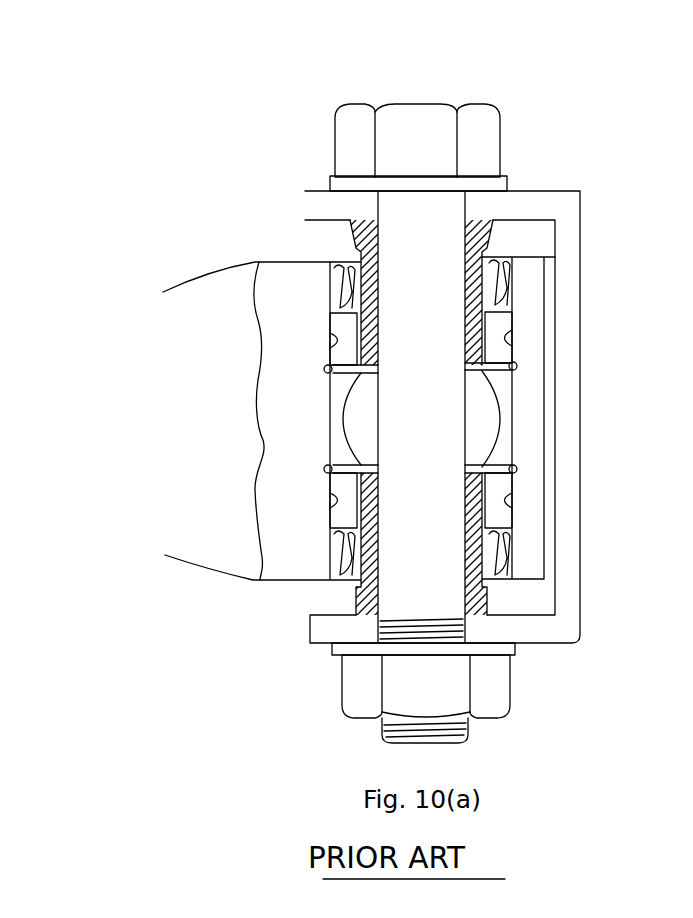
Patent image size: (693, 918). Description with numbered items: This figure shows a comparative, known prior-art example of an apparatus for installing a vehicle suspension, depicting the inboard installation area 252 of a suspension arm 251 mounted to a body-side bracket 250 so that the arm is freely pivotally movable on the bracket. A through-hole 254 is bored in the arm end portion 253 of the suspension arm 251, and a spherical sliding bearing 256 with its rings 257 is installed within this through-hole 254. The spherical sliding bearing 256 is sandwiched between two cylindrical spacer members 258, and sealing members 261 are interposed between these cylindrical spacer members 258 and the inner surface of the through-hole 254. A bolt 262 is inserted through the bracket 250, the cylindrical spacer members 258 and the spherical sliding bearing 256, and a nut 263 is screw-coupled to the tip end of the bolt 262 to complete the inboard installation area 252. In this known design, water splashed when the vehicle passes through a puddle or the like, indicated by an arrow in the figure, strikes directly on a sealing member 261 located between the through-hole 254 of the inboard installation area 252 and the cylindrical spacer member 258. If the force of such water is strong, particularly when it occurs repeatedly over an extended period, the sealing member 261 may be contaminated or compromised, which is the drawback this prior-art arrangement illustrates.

The body-side bracket 250 is at (547, 191).
The suspension arm 251 is at (193, 283).
The inboard installation area 252 is at (280, 527).
The arm end portion 253 is at (215, 178).
The through-hole 254 is at (330, 333).
The spherical sliding bearing 256 is at (537, 396).
The rings 257 is at (324, 369).
The cylindrical spacer members 258 is at (501, 320).
The sealing members 261 is at (513, 282).
The bolt 262 is at (411, 104).
The nut 263 is at (338, 692).